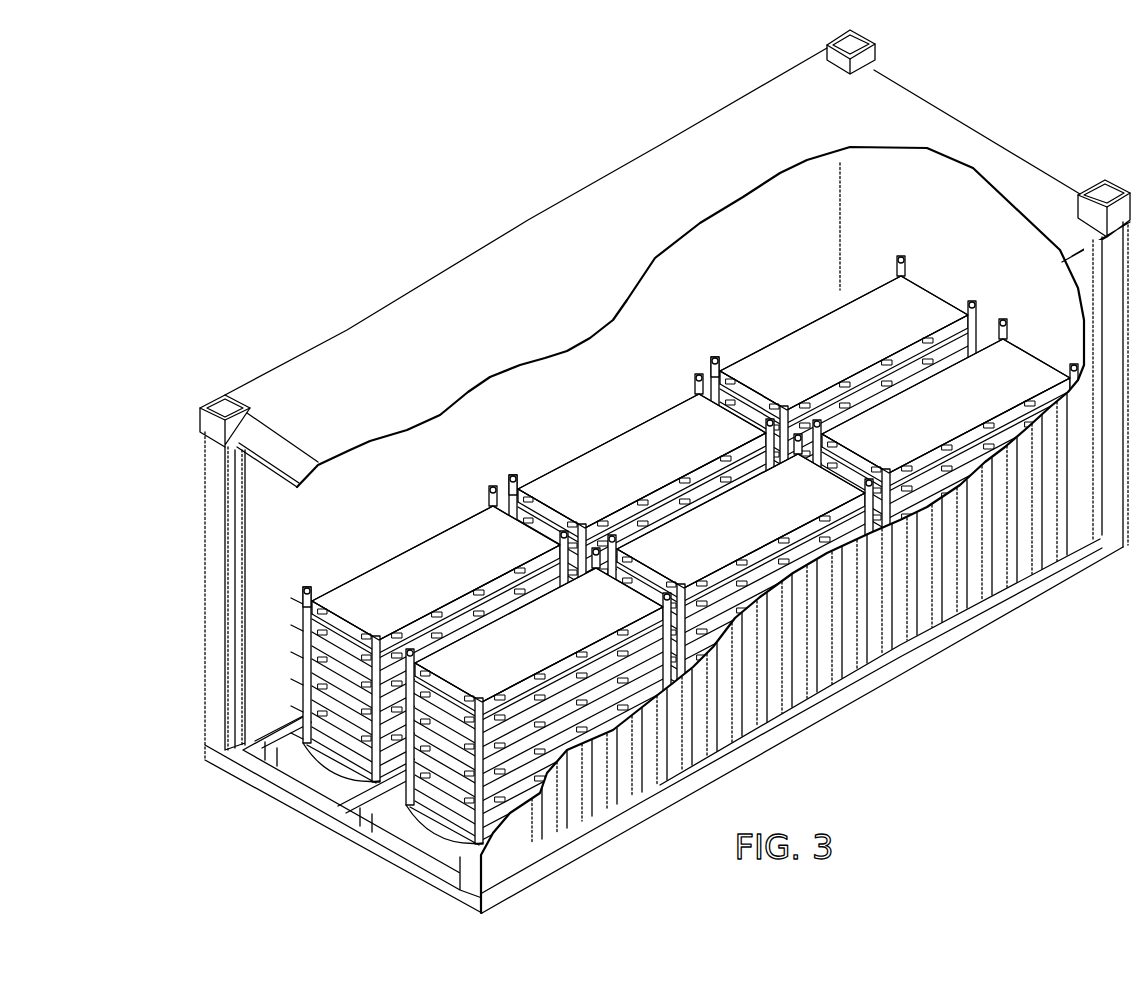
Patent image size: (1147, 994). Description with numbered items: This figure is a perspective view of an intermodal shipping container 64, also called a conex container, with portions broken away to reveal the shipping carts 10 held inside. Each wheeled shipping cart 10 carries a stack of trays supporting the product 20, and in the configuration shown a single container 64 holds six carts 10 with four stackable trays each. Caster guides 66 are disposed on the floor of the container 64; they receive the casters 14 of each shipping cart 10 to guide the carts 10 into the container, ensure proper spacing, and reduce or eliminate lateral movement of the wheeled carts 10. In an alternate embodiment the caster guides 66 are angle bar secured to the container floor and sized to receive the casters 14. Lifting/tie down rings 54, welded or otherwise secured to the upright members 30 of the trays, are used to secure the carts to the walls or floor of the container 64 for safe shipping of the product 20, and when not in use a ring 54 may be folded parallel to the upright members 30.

The shipping cart 10 is at (653, 561).
The casters 14 is at (297, 745).
The product 20 is at (824, 355).
The upright members 30 is at (298, 618).
The lifting/tie down rings 54 is at (712, 358).
The intermodal shipping container 64 is at (656, 471).
The caster guides 66 is at (263, 748).